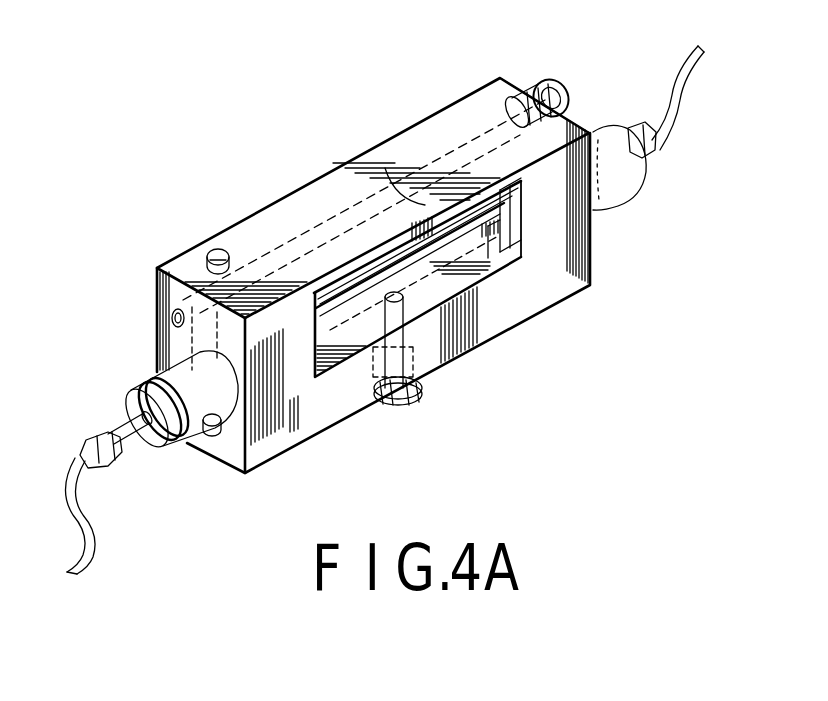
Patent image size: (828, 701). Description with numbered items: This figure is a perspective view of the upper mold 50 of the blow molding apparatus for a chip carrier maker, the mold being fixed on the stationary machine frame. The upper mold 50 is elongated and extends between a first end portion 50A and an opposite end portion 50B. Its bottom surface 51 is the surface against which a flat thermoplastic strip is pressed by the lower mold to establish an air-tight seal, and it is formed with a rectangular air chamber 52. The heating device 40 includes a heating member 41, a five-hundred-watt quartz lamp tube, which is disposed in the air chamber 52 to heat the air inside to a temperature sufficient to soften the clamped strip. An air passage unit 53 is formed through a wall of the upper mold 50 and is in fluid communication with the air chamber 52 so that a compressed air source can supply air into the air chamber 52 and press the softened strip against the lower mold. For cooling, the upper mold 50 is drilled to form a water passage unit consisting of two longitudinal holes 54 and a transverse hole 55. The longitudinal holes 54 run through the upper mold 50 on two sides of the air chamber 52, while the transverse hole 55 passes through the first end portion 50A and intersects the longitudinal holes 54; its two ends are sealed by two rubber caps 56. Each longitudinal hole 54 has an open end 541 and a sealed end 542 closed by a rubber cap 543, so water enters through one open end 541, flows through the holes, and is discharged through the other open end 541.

The heating device 40 is at (607, 193).
The heating member 41 is at (392, 170).
The upper mold 50 is at (540, 310).
The first end portion 50A is at (152, 273).
The right end of block 50B is at (512, 84).
The bottom surface 51 is at (555, 278).
The air chamber 52 is at (457, 293).
The air passage unit 53 is at (413, 357).
The longitudinal holes 54 is at (262, 262).
The open end 541 is at (553, 87).
The sealed end 542 is at (178, 345).
The rubber cap 543 is at (170, 318).
The transverse hole 55 is at (194, 276).
The rubber caps 56 is at (218, 249).